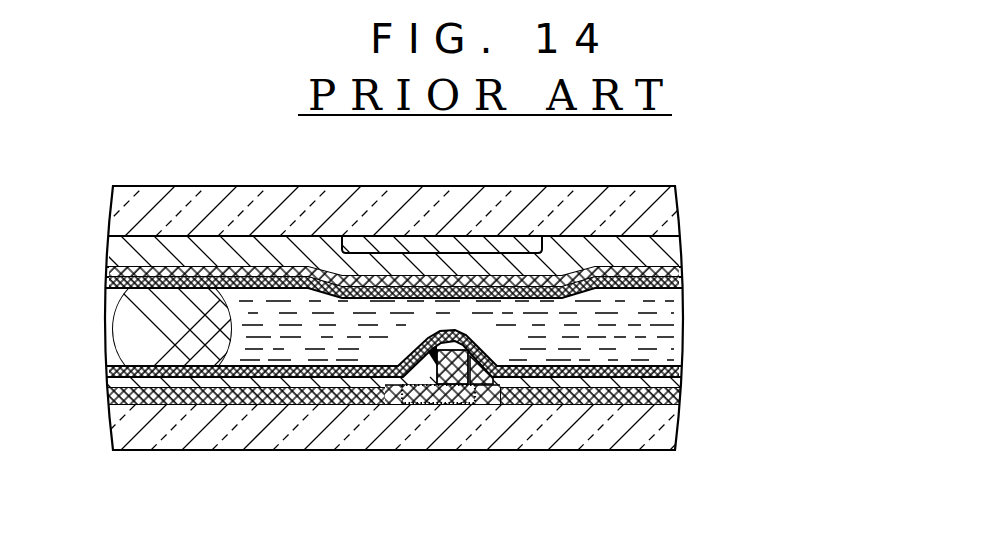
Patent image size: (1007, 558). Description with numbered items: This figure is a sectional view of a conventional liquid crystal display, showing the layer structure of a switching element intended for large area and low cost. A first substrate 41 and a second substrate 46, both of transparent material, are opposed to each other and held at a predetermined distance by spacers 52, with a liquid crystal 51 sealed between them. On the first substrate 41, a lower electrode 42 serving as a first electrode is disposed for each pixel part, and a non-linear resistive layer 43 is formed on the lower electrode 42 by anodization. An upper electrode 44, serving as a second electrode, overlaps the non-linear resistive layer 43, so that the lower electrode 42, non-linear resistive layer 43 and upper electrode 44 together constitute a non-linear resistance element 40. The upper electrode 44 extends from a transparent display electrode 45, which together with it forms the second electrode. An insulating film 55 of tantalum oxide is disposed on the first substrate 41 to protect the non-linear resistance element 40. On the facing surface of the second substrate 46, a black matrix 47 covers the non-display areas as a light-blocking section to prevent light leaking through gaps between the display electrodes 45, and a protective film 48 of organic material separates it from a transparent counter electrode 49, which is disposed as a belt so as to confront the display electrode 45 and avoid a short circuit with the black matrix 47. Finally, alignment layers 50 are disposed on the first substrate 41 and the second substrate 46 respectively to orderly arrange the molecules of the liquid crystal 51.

The non-linear resistance element 40 is at (435, 348).
The first substrate 41 is at (664, 432).
The lower electrode 42 is at (449, 400).
The non-linear resistive layer 43 is at (403, 399).
The upper electrode 44 is at (494, 376).
The display electrode 45 is at (252, 397).
The second substrate 46 is at (663, 214).
The black matrix 47 is at (467, 242).
The protective film 48 is at (603, 248).
The counter electrode 49 is at (680, 272).
The alignment layer 50 is at (683, 283).
The liquid crystal 51 is at (293, 308).
The spacer 52 is at (140, 327).
The insulating film 55 is at (676, 387).